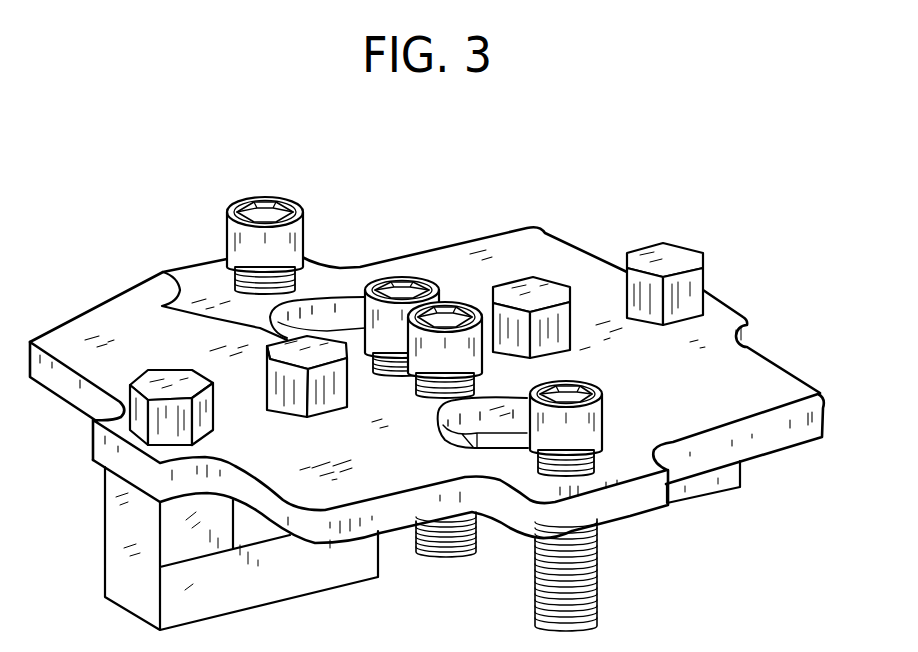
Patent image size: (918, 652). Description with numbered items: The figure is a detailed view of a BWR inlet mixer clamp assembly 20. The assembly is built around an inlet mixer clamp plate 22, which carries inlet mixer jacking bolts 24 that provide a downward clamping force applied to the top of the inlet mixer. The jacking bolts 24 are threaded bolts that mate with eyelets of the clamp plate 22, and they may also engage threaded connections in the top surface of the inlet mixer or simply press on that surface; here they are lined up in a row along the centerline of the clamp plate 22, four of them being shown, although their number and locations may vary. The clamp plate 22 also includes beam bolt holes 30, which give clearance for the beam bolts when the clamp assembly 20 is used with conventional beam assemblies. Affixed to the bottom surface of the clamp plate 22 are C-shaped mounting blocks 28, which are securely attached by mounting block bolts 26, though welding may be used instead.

The inlet mixer clamp assembly 20 is at (642, 168).
The inlet mixer clamp plate 22 is at (506, 233).
The inlet mixer jacking bolts 24 is at (477, 337).
The mounting block bolts 26 is at (170, 382).
The mounting blocks 28 is at (215, 583).
The beam bolt holes 30 is at (285, 347).